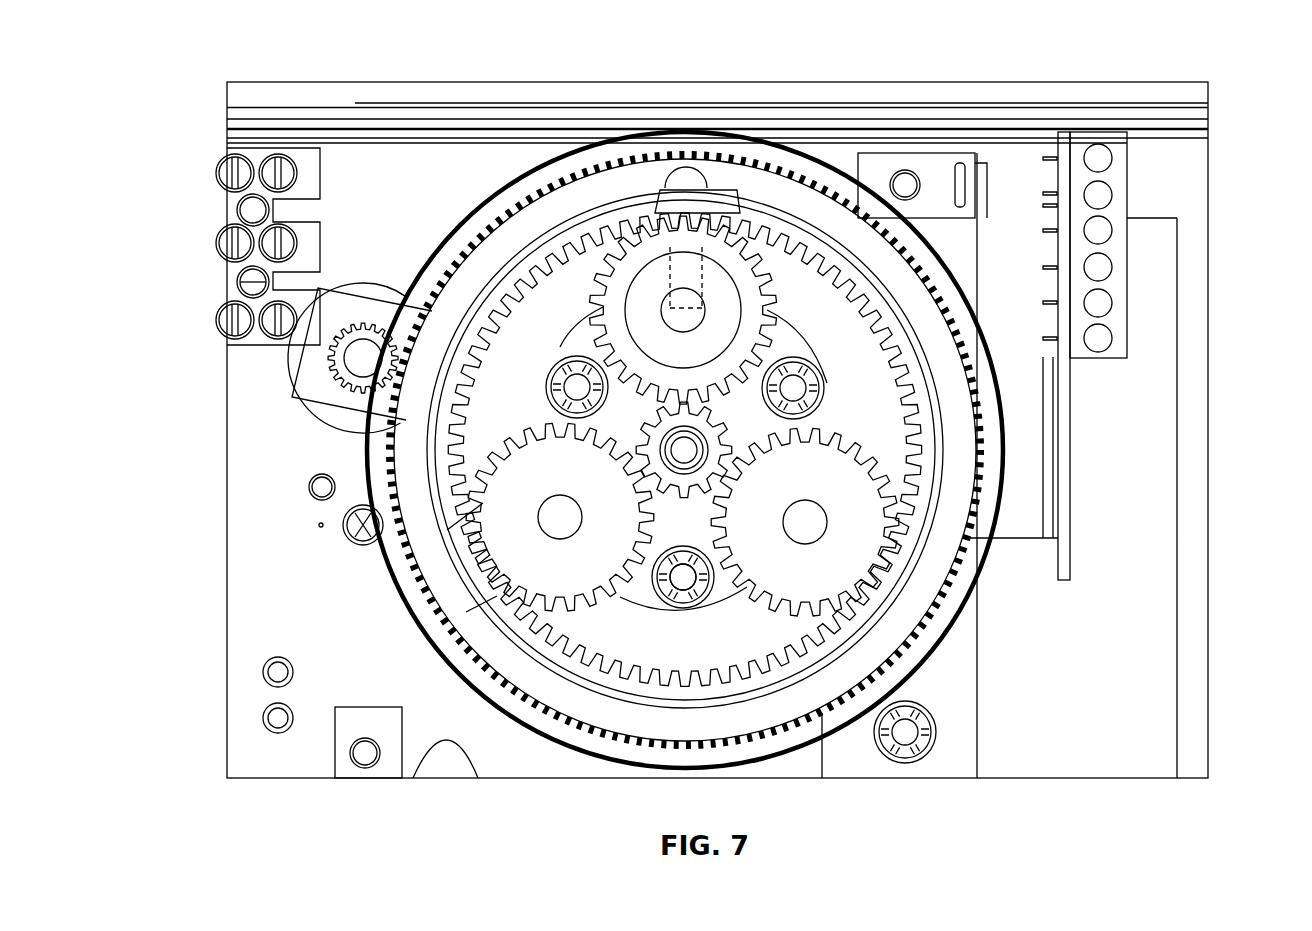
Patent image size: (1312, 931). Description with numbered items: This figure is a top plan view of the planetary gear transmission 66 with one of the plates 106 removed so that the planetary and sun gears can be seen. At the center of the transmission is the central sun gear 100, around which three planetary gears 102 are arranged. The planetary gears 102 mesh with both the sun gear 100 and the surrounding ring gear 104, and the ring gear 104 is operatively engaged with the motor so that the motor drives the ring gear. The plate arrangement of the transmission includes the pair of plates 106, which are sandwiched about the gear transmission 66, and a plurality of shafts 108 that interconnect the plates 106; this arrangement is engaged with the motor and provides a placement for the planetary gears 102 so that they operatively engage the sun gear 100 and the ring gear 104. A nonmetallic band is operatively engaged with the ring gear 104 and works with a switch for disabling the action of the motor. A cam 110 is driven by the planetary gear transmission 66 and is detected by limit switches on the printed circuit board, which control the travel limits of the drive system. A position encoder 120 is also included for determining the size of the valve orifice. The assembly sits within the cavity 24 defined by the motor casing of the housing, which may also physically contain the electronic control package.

The cavity 24 is at (414, 778).
The planetary gear transmission 66 is at (953, 535).
The central sun gear 100 is at (683, 455).
The planetary gears 102 is at (657, 228).
The ring gear 104 is at (683, 577).
The plates 106 is at (838, 413).
The shafts 108 is at (556, 362).
The cam 110 is at (683, 176).
The position encoder 120 is at (290, 373).